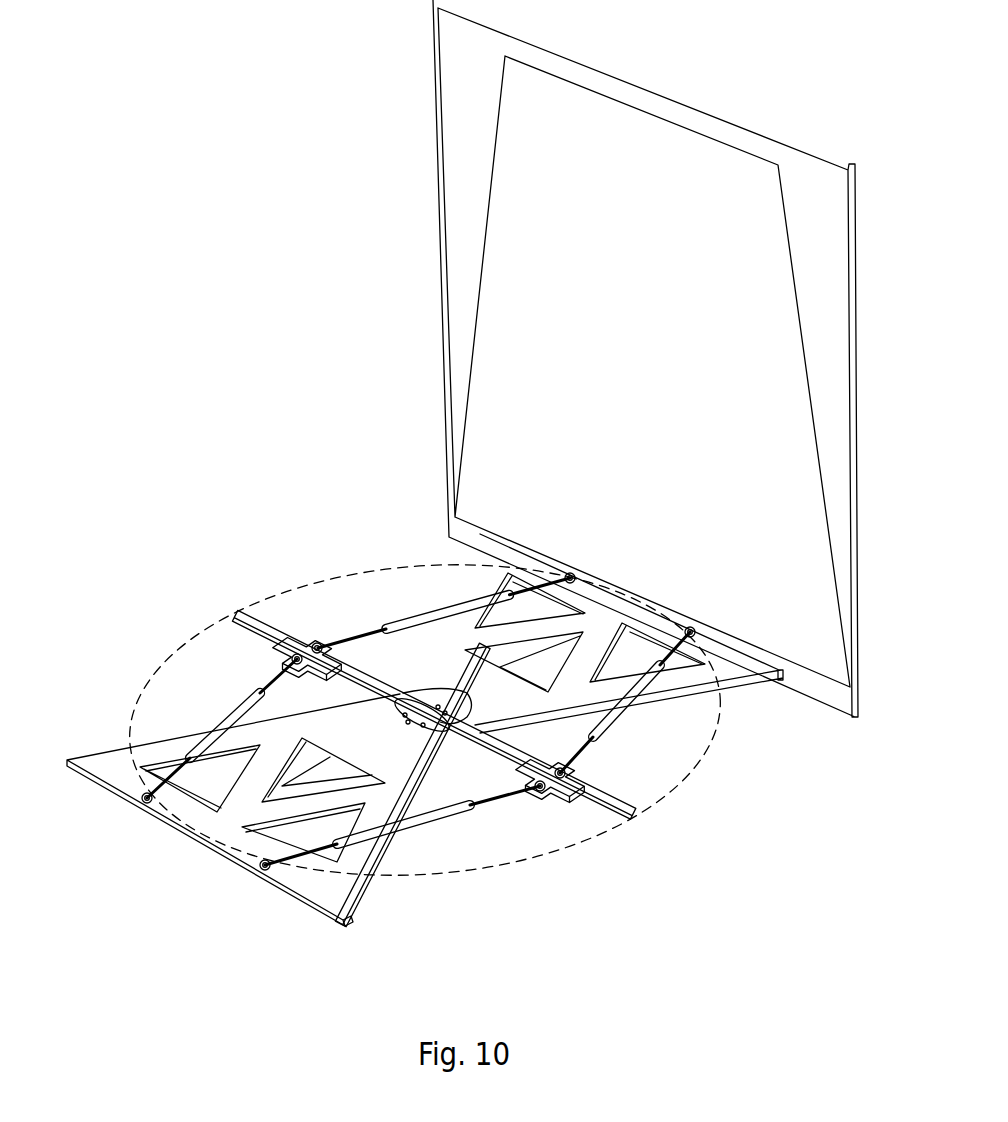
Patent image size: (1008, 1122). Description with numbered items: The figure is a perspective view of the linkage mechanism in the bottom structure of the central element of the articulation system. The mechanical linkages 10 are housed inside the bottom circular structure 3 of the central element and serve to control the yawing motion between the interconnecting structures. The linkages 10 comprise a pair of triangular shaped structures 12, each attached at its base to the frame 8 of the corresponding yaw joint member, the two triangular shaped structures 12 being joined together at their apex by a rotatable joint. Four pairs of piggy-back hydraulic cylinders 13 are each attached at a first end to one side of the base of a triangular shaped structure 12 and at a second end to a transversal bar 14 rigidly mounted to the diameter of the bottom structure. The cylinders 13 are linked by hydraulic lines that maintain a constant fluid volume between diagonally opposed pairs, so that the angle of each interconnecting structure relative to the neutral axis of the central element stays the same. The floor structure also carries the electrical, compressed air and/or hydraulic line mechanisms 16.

The bottom circular structure 3 is at (510, 840).
The frame 8 is at (467, 124).
The mechanical linkage 10 is at (178, 605).
The triangular shaped structure 12 is at (223, 830).
The piggy-back hydraulic cylinder 13 is at (435, 612).
The transversal bar 14 is at (242, 617).
The electrical, compressed air and/or hydraulic line mechanism 16 is at (527, 663).